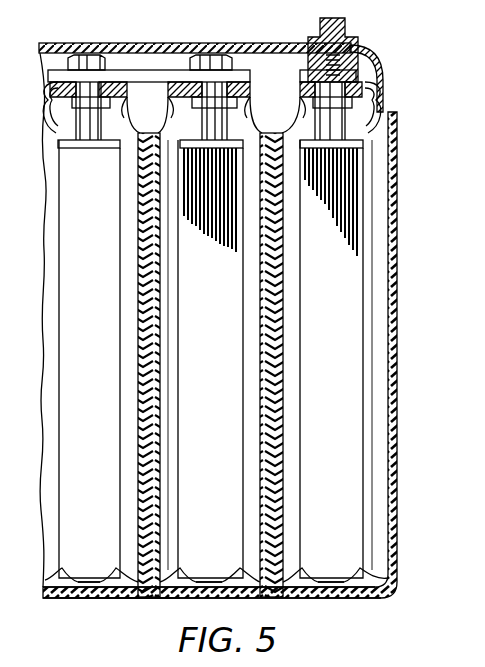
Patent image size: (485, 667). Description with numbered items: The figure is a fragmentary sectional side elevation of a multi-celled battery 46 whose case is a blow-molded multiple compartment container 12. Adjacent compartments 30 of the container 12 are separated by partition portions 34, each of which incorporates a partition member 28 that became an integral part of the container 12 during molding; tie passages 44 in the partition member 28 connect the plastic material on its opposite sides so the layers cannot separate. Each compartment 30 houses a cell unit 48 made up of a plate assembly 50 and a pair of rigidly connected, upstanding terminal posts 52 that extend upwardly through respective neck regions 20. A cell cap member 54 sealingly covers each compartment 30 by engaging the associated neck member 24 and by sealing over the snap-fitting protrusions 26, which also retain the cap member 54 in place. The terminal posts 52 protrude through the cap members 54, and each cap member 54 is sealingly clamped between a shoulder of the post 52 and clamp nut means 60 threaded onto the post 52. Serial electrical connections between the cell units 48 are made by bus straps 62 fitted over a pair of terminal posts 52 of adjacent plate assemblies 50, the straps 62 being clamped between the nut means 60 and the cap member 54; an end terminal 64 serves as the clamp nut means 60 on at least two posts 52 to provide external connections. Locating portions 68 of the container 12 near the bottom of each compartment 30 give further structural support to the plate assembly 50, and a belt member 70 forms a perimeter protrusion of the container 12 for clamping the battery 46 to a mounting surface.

The container 12 is at (87, 600).
The neck region 20 is at (68, 118).
The neck member 24 is at (250, 80).
The snap-fitting protrusion 26 is at (246, 98).
The partition member 28 is at (262, 518).
The compartment 30 is at (173, 403).
The partition portion 34 is at (260, 308).
The tie passage 44 is at (280, 461).
The multi-celled battery 46 is at (95, 603).
The cell unit 48 is at (58, 388).
The plate assembly 50 is at (102, 424).
The terminal post 52 is at (70, 148).
The cell cap member 54 is at (48, 90).
The clamp nut means 60 is at (106, 46).
The bus strap 62 is at (244, 66).
The end terminal 64 is at (350, 30).
The locating portion 68 is at (238, 578).
The belt member 70 is at (392, 516).